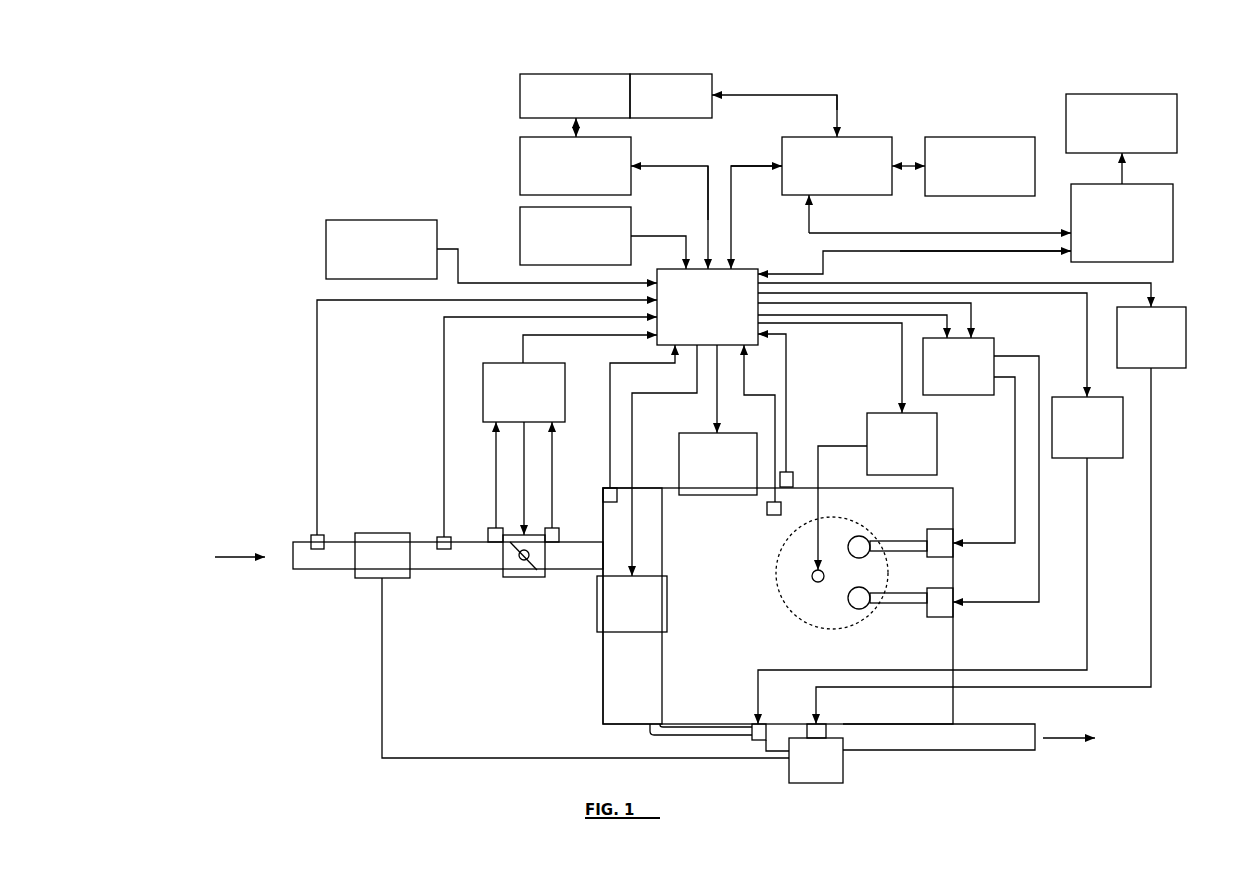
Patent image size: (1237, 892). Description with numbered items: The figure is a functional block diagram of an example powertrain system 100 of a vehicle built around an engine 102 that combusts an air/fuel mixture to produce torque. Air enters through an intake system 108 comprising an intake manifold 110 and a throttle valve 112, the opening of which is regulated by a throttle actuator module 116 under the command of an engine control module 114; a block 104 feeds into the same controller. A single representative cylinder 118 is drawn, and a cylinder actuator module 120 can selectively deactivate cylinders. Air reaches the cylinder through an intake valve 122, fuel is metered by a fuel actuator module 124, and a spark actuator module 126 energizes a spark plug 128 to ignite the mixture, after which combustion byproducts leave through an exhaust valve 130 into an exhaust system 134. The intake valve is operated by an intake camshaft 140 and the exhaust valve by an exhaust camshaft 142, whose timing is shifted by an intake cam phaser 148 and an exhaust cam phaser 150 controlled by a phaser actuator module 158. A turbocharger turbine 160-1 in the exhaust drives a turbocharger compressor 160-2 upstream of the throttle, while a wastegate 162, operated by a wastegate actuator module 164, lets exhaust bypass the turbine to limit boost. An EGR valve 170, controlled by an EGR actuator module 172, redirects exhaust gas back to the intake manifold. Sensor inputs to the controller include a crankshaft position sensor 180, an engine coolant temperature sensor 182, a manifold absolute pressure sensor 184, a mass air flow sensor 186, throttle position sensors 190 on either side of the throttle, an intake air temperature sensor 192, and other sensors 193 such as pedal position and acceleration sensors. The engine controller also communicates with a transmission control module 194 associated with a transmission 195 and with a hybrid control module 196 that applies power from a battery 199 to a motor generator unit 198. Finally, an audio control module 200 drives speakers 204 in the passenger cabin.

The powertrain system 100 is at (225, 108).
The engine 102 is at (953, 497).
The gas delivery system 104 is at (520, 236).
The intake system 108 is at (290, 600).
The intake manifold 110 is at (603, 669).
The throttle valve 112 is at (521, 577).
The engine control module 114 is at (748, 269).
The throttle actuator module 116 is at (505, 363).
The cylinder 118 is at (802, 621).
The cylinder actuator module 120 is at (732, 433).
The intake valve 122 is at (860, 535).
The fuel actuator module 124 is at (648, 632).
The spark actuator module 126 is at (937, 445).
The spark plug 128 is at (812, 577).
The exhaust valve 130 is at (857, 612).
The exhaust system 134 is at (1010, 752).
The intake camshaft 140 is at (905, 541).
The exhaust camshaft 142 is at (907, 604).
The intake cam phaser 148 is at (940, 529).
The exhaust cam phaser 150 is at (940, 617).
The phaser actuator module 158 is at (994, 345).
The turbocharger turbine 160-1 is at (843, 765).
The turbocharger compressor 160-2 is at (368, 578).
The wastegate 162 is at (826, 728).
The wastegate actuator module 164 is at (1168, 368).
The EGR valve 170 is at (758, 740).
The EGR actuator module 172 is at (1100, 458).
The crankshaft position sensor 180 is at (793, 473).
The engine coolant temperature sensor 182 is at (774, 515).
The manifold absolute pressure sensor 184 is at (605, 488).
The mass air flow sensor 186 is at (437, 537).
The throttle position sensor 190 is at (498, 542).
The intake air temperature sensor 192 is at (311, 540).
The other sensors 193 is at (326, 233).
The transmission control module 194 is at (520, 165).
The transmission 195 is at (520, 97).
The hybrid control module 196 is at (838, 195).
The motor generator unit 198 is at (672, 118).
The battery 199 is at (980, 196).
The audio control module 200 is at (1173, 228).
The speakers 204 is at (1177, 125).